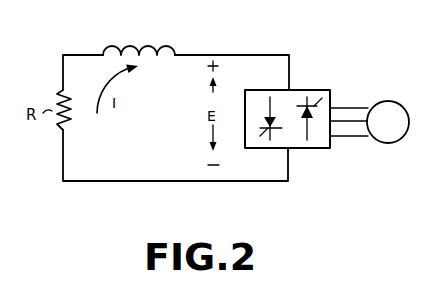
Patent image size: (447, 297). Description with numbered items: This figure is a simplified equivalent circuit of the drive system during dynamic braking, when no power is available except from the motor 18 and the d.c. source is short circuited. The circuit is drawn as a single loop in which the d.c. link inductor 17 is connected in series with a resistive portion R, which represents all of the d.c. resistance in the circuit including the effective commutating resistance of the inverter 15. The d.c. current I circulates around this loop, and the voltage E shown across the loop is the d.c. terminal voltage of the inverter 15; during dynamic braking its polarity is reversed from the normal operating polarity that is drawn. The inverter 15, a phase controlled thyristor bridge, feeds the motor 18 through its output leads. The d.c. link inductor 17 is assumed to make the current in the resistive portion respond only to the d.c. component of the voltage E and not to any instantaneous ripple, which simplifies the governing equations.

The inverter 15 is at (318, 90).
The d.c. link inductor 17 is at (176, 52).
The motor 18 is at (390, 101).